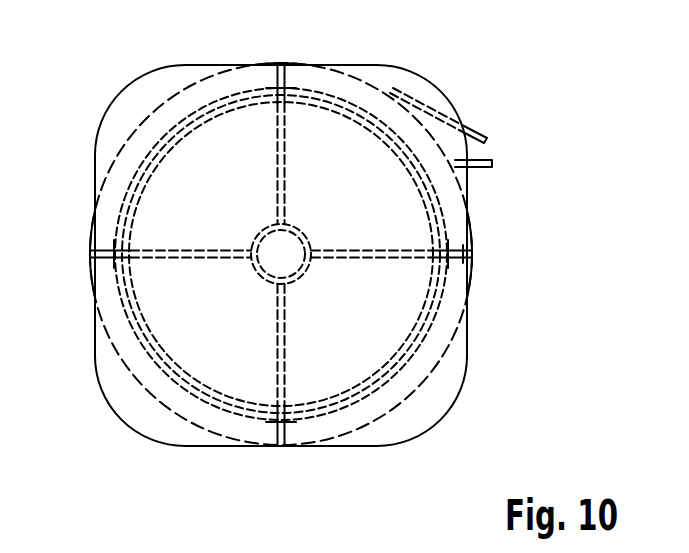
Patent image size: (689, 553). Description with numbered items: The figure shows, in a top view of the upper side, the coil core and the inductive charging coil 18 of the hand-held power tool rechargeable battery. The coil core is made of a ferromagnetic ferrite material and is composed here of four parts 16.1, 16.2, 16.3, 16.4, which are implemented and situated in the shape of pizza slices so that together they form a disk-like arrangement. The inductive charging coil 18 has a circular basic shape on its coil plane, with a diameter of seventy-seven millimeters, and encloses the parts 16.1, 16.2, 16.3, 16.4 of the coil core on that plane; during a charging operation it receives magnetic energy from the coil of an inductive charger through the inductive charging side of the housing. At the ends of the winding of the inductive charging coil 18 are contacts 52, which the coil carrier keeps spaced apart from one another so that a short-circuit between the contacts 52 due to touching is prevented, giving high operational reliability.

The part of coil core 16.1 is at (145, 92).
The part of coil core 16.2 is at (418, 92).
The part of coil core 16.3 is at (440, 388).
The part of coil core 16.4 is at (120, 387).
The inductive charging coil 18 is at (448, 325).
The contacts 52 is at (490, 140).